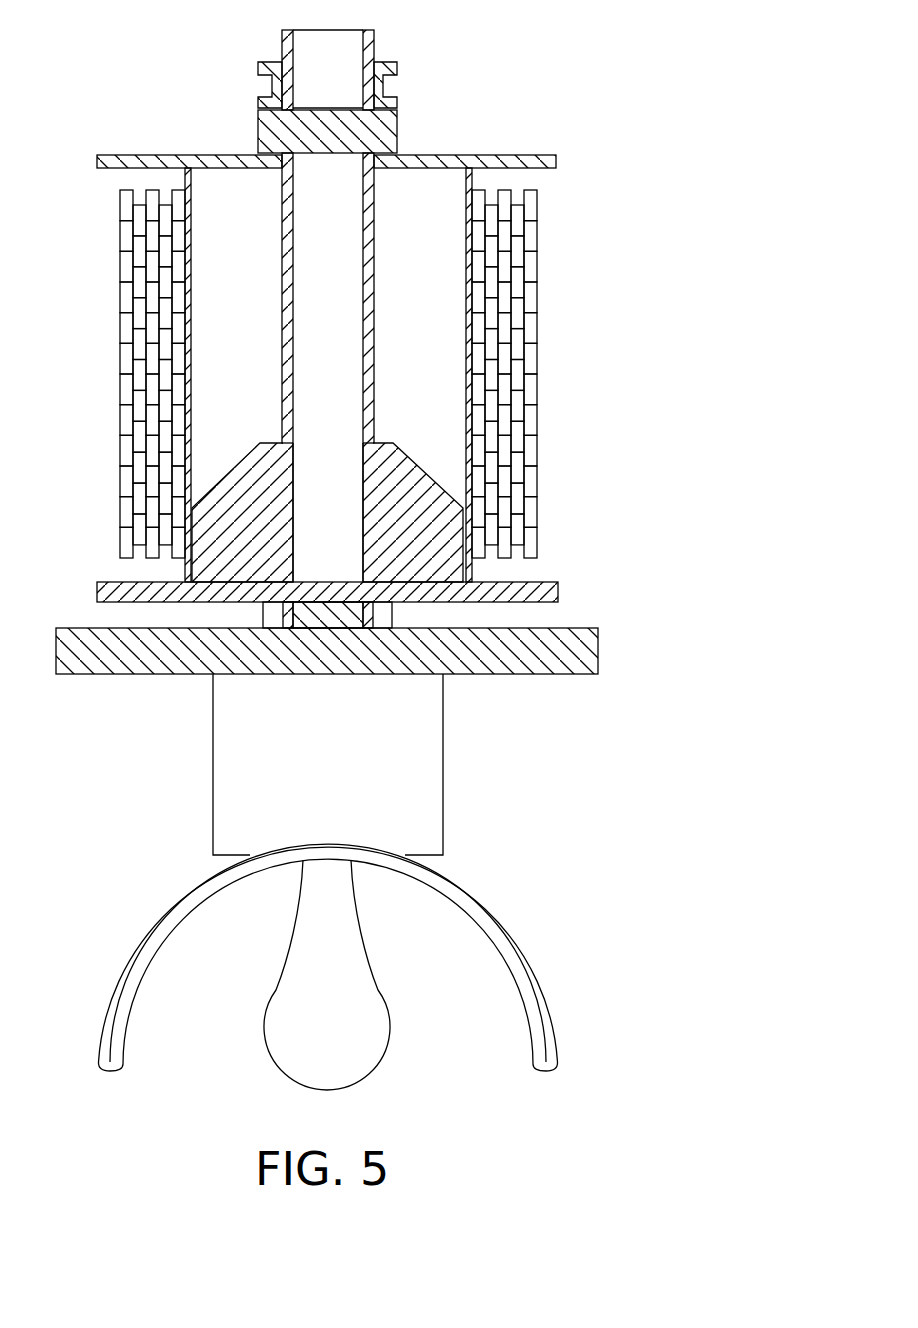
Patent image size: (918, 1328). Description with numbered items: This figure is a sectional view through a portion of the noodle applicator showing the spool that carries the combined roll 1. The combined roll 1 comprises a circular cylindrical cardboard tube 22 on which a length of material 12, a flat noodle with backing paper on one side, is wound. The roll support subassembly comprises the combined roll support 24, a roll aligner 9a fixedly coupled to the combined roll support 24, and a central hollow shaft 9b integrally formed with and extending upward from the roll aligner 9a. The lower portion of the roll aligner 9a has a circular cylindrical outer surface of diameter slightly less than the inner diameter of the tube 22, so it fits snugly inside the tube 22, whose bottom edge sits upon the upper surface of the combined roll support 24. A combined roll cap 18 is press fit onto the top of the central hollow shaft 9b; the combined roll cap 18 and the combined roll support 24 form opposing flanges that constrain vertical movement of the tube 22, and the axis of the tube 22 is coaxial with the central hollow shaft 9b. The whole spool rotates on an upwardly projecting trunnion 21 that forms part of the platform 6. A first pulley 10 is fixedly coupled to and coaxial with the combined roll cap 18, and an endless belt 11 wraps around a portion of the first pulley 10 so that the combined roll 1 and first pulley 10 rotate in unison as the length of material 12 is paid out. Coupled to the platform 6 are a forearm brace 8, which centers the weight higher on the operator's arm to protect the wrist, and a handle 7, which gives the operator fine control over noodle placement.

The combined roll 1 is at (342, 313).
The platform 6 is at (598, 652).
The handle 7 is at (373, 972).
The forearm brace 8 is at (502, 912).
The roll aligner 9a is at (428, 477).
The central hollow shaft 9b is at (375, 255).
The first pulley 10 is at (395, 62).
The endless belt 11 is at (385, 84).
The length of material 12 is at (120, 305).
The combined roll cap 18 is at (150, 155).
The trunnion 21 is at (312, 607).
The cardboard tube 22 is at (185, 252).
The combined roll support 24 is at (558, 592).